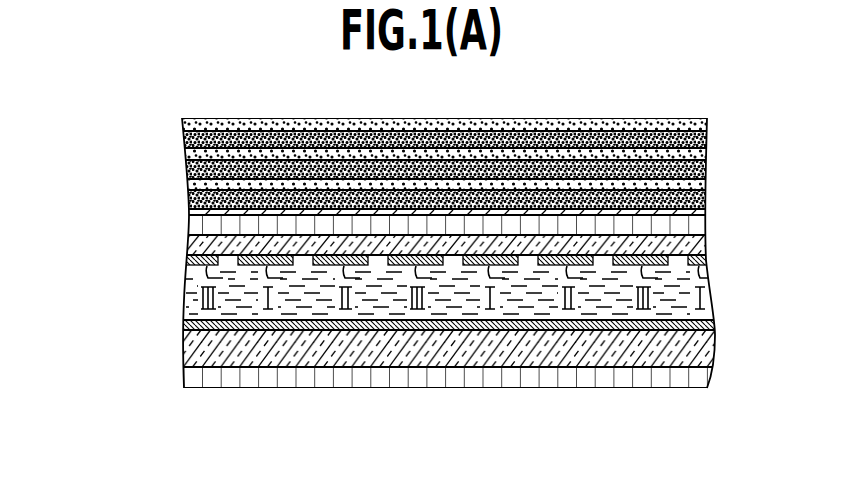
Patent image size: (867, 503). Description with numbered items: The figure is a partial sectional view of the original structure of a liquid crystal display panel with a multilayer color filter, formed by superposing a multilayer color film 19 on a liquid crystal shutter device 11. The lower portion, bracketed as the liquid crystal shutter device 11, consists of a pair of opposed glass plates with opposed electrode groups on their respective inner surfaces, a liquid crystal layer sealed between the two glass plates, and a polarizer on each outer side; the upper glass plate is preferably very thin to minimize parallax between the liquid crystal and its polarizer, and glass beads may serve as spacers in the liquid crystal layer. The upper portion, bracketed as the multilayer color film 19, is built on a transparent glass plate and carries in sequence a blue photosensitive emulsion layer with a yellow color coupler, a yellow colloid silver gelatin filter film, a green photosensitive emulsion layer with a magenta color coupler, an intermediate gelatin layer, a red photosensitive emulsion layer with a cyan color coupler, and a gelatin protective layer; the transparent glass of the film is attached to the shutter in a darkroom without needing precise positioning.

The liquid crystal shutter device 11 is at (71, 309).
The multilayer color film 19 is at (71, 166).